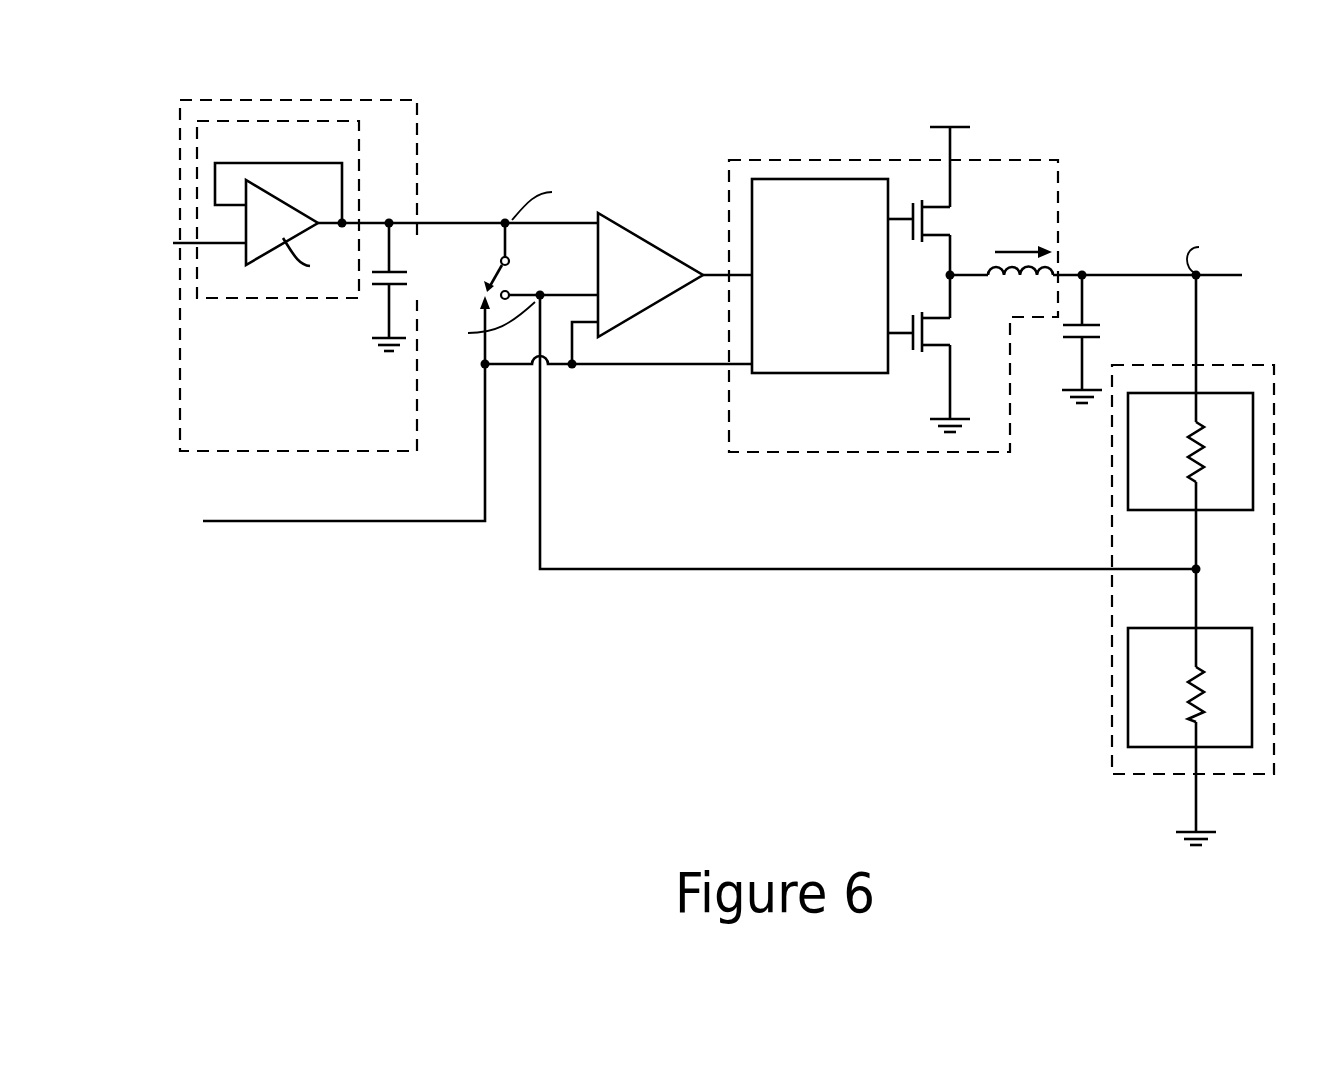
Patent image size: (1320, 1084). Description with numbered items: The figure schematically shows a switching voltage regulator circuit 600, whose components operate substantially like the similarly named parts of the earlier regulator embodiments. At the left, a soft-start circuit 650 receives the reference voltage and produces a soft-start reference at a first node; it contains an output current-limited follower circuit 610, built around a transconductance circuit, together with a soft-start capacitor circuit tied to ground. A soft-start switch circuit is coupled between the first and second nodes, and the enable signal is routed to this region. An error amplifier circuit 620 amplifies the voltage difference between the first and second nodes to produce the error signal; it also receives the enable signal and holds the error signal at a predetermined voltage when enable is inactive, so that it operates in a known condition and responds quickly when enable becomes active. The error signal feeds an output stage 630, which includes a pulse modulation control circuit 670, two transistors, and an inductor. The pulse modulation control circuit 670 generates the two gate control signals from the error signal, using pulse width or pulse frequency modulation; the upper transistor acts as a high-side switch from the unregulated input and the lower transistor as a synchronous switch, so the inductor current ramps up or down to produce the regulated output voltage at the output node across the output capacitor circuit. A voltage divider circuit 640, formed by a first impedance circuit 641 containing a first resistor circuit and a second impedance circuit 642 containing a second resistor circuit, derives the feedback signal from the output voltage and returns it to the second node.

The switching voltage regulator circuit 600 is at (810, 96).
The output current-limited follower circuit 610 is at (305, 152).
The error amplifier circuit 620 is at (660, 285).
The output stage 630 is at (1053, 197).
The voltage divider circuit 640 is at (1242, 554).
The impedance circuit 641 is at (1243, 421).
The impedance circuit 642 is at (1243, 656).
The soft-start circuit 650 is at (409, 137).
The pulse modulation control circuit 670 is at (840, 345).